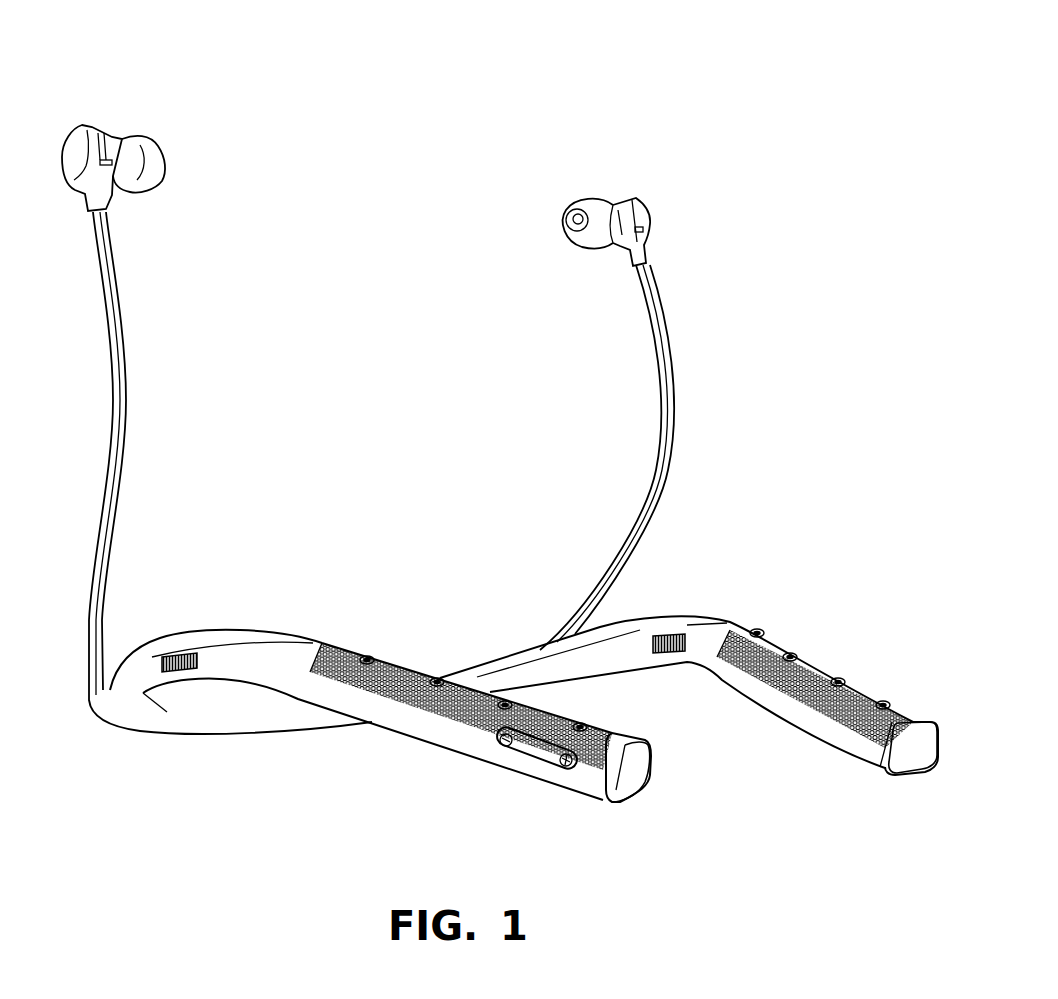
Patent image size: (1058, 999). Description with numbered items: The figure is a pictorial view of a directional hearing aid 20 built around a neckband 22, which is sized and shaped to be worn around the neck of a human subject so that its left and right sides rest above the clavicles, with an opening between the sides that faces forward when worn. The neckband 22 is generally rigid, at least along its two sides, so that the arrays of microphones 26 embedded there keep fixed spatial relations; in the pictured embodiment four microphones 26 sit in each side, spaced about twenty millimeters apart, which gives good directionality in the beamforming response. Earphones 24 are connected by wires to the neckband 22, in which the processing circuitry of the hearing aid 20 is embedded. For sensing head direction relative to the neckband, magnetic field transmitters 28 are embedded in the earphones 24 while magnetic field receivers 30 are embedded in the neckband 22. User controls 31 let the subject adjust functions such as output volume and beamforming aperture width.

The directional hearing aid 20 is at (627, 80).
The neckband 22 is at (380, 713).
The earphones 24 is at (153, 170).
The microphones 26 is at (368, 660).
The magnetic field transmitters 28 is at (104, 138).
The magnetic field receivers 30 is at (177, 655).
The user controls 31 is at (533, 747).